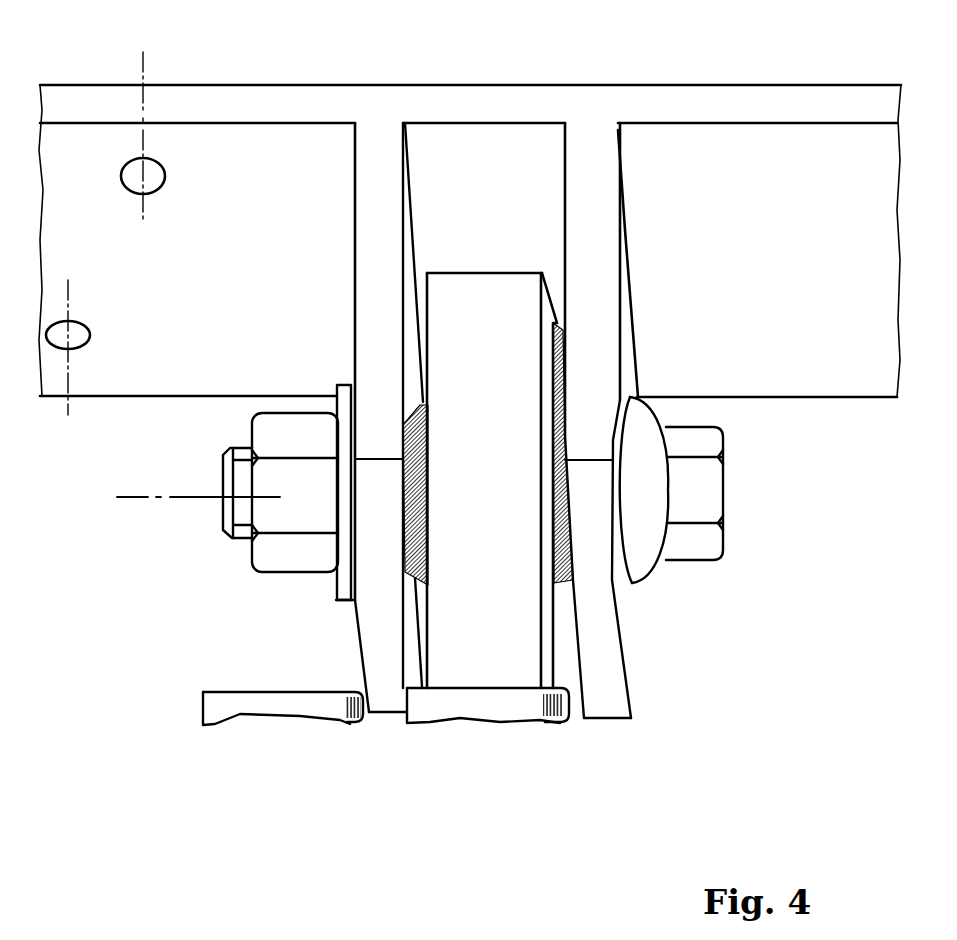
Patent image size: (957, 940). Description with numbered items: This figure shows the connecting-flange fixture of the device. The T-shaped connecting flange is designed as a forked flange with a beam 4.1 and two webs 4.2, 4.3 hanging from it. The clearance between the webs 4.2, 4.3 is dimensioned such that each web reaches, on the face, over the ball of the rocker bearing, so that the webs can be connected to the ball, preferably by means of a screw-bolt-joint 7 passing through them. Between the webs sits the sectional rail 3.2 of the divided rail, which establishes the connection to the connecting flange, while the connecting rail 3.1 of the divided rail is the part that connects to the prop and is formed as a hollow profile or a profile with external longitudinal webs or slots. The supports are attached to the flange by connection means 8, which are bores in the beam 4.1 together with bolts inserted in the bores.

The beam 4.1 is at (668, 107).
The web 4.2 is at (607, 702).
The web 4.3 is at (385, 695).
The connecting rail 3.1 is at (238, 708).
The sectional rail 3.2 is at (488, 480).
The screw-bolt-joint 7 is at (697, 498).
The connection means 8 is at (155, 175).